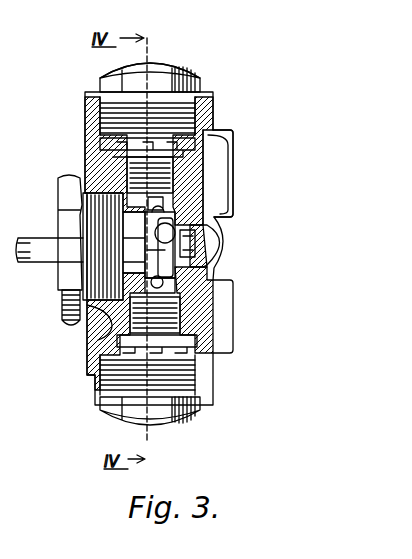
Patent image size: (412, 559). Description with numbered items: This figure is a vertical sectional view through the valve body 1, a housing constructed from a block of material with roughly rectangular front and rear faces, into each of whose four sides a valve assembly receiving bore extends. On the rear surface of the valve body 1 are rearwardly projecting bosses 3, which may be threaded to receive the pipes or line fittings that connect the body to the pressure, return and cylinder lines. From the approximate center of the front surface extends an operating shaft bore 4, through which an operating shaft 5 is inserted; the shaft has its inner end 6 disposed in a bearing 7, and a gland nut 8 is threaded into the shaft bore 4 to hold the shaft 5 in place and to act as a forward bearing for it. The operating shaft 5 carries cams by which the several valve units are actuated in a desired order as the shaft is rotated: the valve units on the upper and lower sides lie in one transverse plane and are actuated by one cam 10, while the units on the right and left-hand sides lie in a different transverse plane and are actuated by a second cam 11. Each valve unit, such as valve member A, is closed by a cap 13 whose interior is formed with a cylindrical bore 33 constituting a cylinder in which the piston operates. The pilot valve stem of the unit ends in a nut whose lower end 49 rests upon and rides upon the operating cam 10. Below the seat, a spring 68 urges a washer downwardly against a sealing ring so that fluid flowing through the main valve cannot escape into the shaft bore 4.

The valve body 1 is at (213, 100).
The rearwardly projecting bosses 3 is at (220, 143).
The operating shaft bore 4 is at (115, 180).
The operating shaft 5 is at (40, 240).
The inner end of operating shaft 6 is at (187, 218).
The bearing 7 is at (195, 259).
The gland nut 8 is at (65, 320).
The cam 10 is at (155, 250).
The second cam 11 is at (170, 203).
The cap 13 is at (186, 80).
The cylindrical bore 33 is at (173, 167).
The lower end of nut 49 is at (162, 285).
The spring 68 is at (130, 323).
The valve member A is at (180, 62).